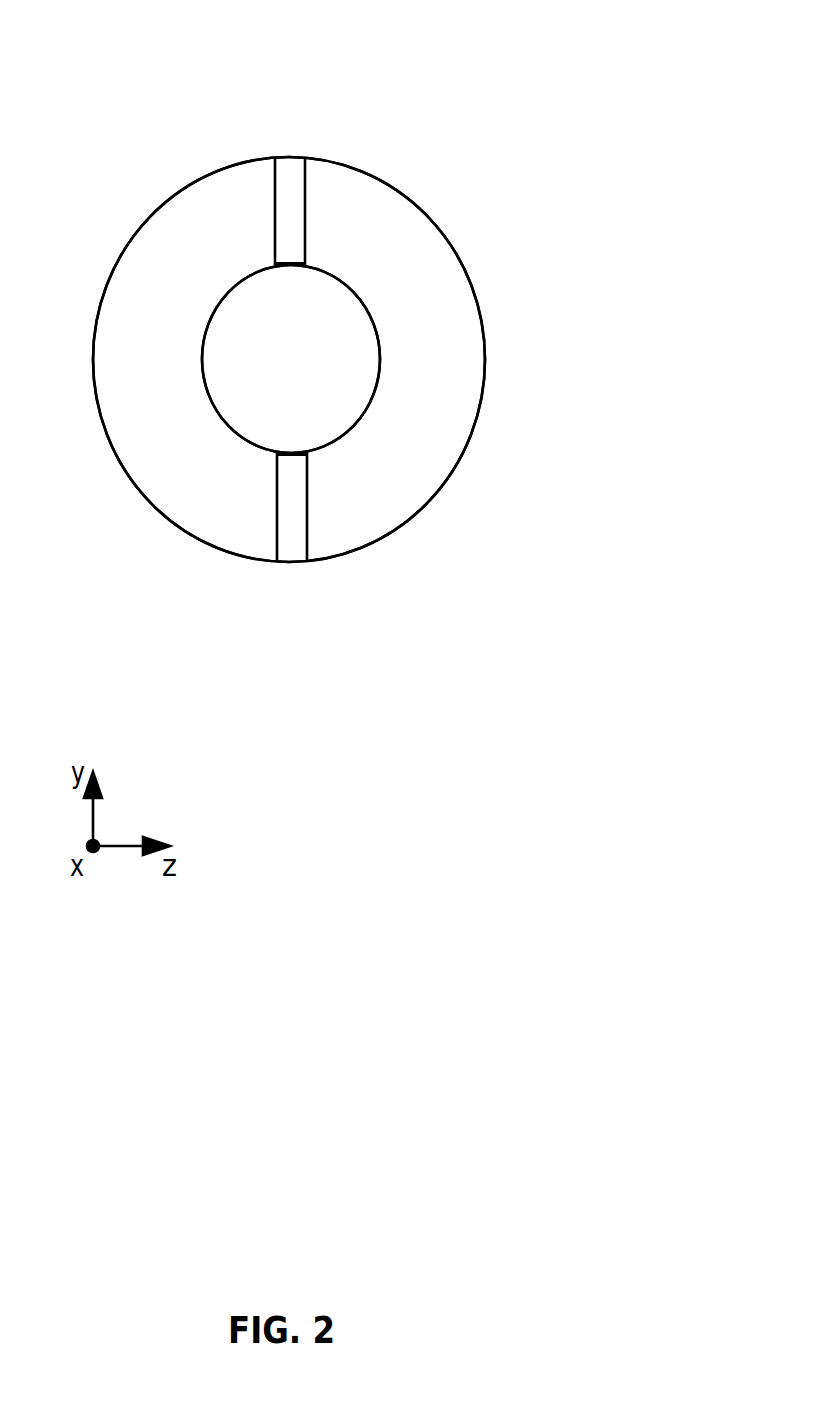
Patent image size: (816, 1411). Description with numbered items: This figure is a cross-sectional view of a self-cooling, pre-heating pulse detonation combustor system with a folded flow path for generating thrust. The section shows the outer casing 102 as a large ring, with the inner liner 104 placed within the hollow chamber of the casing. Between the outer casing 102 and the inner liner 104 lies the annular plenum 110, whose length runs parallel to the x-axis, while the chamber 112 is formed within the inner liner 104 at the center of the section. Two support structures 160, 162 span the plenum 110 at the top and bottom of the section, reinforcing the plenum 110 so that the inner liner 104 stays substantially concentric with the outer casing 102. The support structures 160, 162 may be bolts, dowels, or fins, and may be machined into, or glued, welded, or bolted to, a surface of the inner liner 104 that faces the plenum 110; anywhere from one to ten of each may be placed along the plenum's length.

The outer casing 102 is at (168, 523).
The inner liner 104 is at (332, 443).
The plenum 110 is at (397, 230).
The chamber 112 is at (257, 315).
The support structure 160 is at (288, 200).
The support structure 162 is at (290, 538).